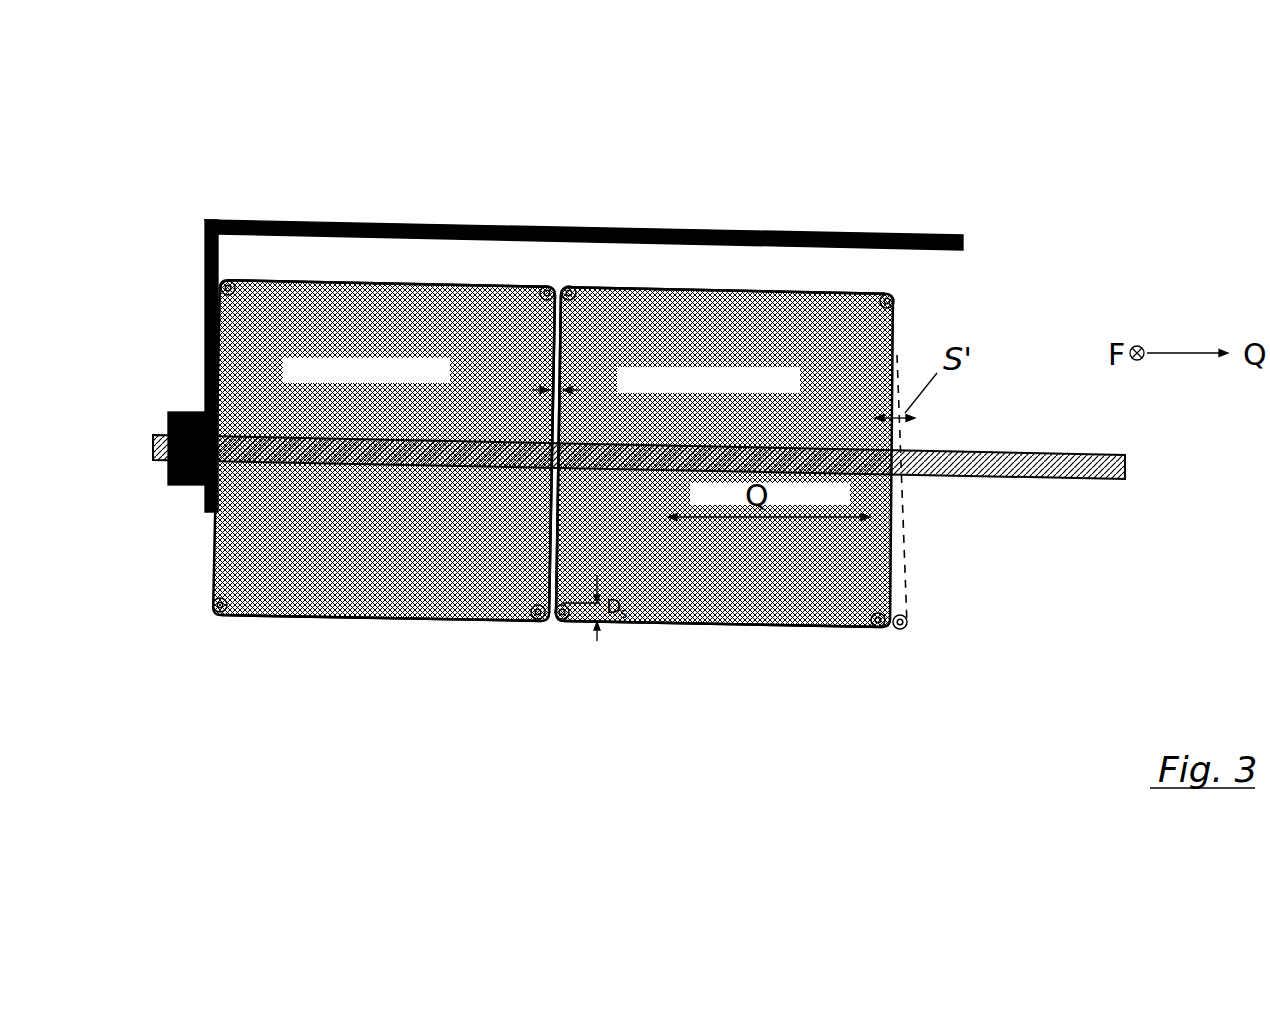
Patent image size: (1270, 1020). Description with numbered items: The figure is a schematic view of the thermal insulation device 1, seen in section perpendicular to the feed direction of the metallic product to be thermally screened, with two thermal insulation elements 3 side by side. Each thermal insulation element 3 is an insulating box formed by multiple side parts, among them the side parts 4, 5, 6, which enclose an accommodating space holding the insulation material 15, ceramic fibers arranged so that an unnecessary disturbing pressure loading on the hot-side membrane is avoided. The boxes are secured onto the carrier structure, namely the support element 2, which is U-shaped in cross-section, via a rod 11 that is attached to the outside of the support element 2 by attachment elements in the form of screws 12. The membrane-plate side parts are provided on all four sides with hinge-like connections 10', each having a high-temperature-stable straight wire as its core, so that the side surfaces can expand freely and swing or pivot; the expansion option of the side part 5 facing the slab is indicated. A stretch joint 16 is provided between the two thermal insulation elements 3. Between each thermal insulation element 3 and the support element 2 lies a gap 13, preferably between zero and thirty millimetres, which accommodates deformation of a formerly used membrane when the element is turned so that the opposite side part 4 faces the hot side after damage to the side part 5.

The thermal insulation device 1 is at (944, 155).
The support element 2 is at (278, 222).
The thermal insulation element 3 is at (394, 636).
The side part 4 is at (440, 283).
The side part 5 is at (430, 620).
The side part 6 is at (205, 540).
The hinge-like connection 10' is at (562, 497).
The rod 11 is at (968, 480).
The screw 12 is at (182, 412).
The gap 13 is at (788, 286).
The insulation material 15 is at (338, 553).
The stretch joint 16 is at (557, 287).